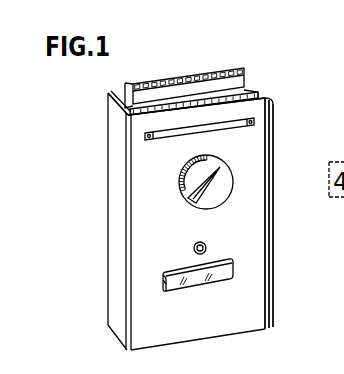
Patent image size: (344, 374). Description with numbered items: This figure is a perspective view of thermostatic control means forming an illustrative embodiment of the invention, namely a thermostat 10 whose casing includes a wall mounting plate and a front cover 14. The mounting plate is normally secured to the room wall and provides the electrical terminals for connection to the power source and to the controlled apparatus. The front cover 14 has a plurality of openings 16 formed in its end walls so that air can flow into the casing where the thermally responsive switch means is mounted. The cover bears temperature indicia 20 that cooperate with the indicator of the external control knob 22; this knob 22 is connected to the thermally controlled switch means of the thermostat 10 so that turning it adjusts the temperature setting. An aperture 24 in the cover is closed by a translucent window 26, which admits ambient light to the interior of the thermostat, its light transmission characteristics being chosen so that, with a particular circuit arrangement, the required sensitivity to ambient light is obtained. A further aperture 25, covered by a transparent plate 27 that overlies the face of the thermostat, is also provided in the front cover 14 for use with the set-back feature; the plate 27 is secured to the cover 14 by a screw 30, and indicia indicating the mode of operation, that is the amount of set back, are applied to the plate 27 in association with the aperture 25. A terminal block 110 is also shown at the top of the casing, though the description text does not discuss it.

The thermostat 10 is at (113, 168).
The front cover 14 is at (255, 109).
The openings 16 is at (252, 90).
The temperature indicia 20 is at (246, 182).
The external control knob 22 is at (189, 200).
The aperture 24 is at (222, 284).
The further aperture 25 is at (254, 128).
The translucent window 26 is at (165, 285).
The transparent plate 27 is at (128, 115).
The screw 30 is at (204, 244).
The terminal block 110 is at (211, 64).